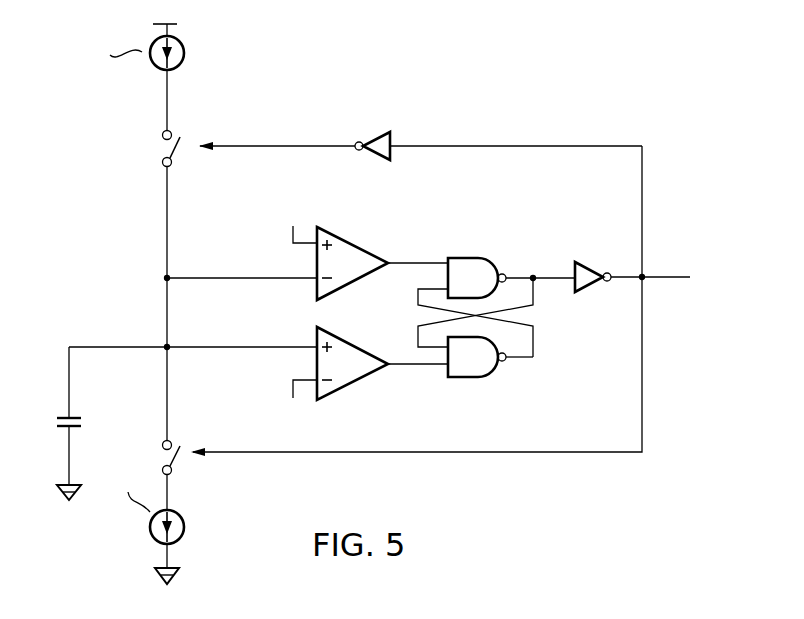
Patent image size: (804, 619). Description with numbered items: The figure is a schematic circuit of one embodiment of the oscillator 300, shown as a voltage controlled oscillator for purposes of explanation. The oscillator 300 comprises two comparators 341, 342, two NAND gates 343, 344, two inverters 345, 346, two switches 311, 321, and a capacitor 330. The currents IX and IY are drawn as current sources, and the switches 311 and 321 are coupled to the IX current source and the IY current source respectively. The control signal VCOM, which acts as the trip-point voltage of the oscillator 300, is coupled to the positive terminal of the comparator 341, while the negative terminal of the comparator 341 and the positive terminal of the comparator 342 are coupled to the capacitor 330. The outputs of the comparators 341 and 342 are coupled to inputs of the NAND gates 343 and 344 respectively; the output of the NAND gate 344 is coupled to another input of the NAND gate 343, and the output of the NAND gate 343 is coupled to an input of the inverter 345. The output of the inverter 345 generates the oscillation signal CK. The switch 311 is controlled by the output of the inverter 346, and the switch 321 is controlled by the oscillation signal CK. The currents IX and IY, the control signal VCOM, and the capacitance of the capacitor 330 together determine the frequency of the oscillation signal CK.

The oscillator 300 is at (700, 33).
The switch 311 is at (160, 146).
The switch 321 is at (152, 450).
The capacitor 330 is at (57, 412).
The comparator 341 is at (350, 237).
The comparator 342 is at (340, 395).
The NAND gate 343 is at (463, 253).
The NAND gate 344 is at (468, 384).
The inverter 345 is at (580, 292).
The inverter 346 is at (372, 128).